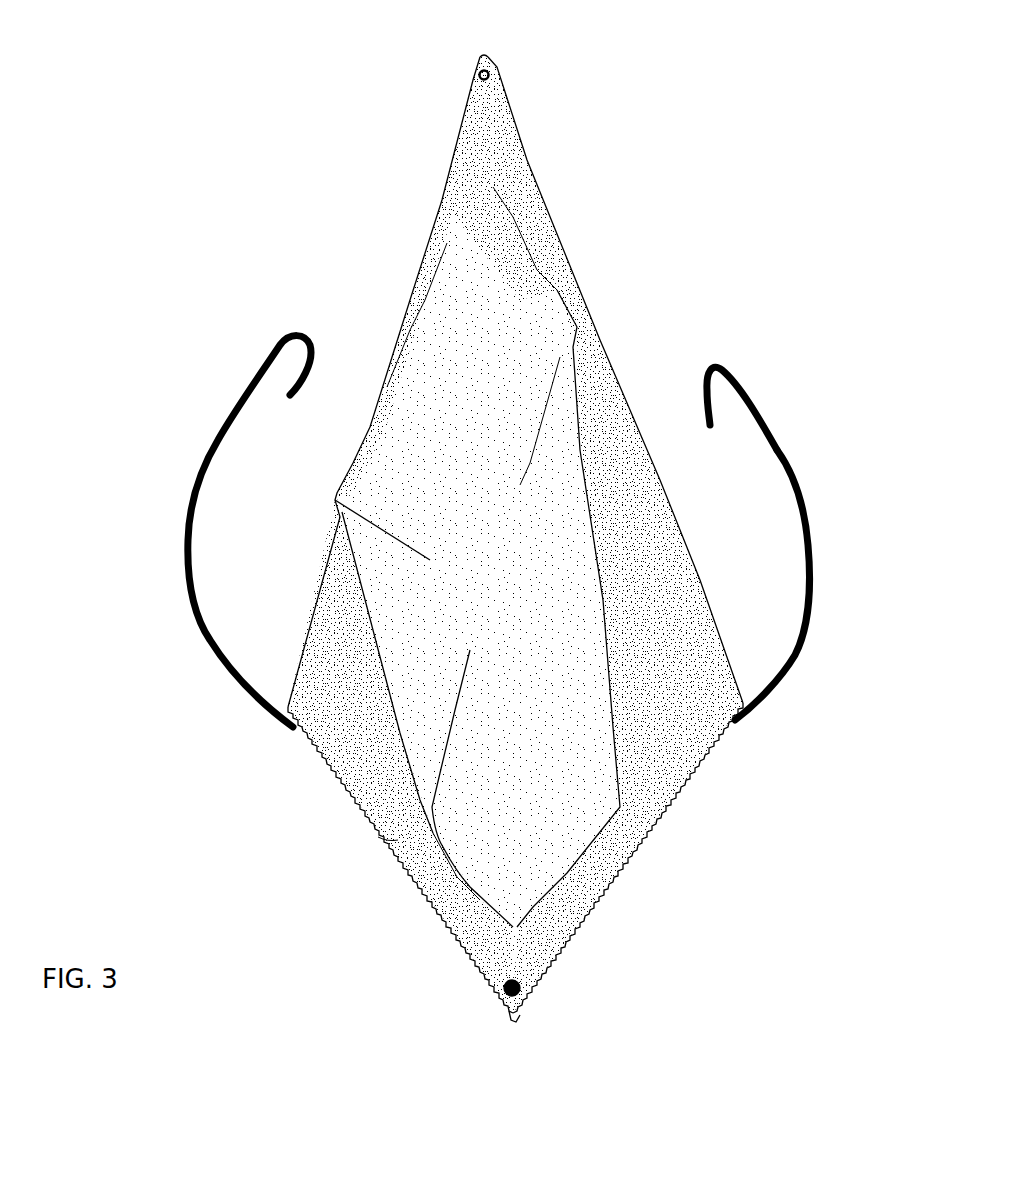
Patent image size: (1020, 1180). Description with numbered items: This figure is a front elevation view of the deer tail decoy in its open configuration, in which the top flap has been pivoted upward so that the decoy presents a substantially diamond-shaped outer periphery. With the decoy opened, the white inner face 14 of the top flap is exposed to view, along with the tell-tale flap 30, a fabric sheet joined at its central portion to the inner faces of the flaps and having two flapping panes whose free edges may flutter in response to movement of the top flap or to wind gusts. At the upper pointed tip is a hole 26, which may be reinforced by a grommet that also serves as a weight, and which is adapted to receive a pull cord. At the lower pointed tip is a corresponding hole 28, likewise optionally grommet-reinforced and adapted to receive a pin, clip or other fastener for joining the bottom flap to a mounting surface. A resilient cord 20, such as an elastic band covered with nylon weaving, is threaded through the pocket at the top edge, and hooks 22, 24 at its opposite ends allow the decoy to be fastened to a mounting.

The rear or inner face 14 is at (608, 437).
The resilient cord 20 is at (806, 503).
The hook 22 is at (737, 377).
The hook 24 is at (278, 343).
The hole 26 is at (497, 72).
The hole 28 is at (521, 999).
The tell-tale flap 30 is at (537, 277).